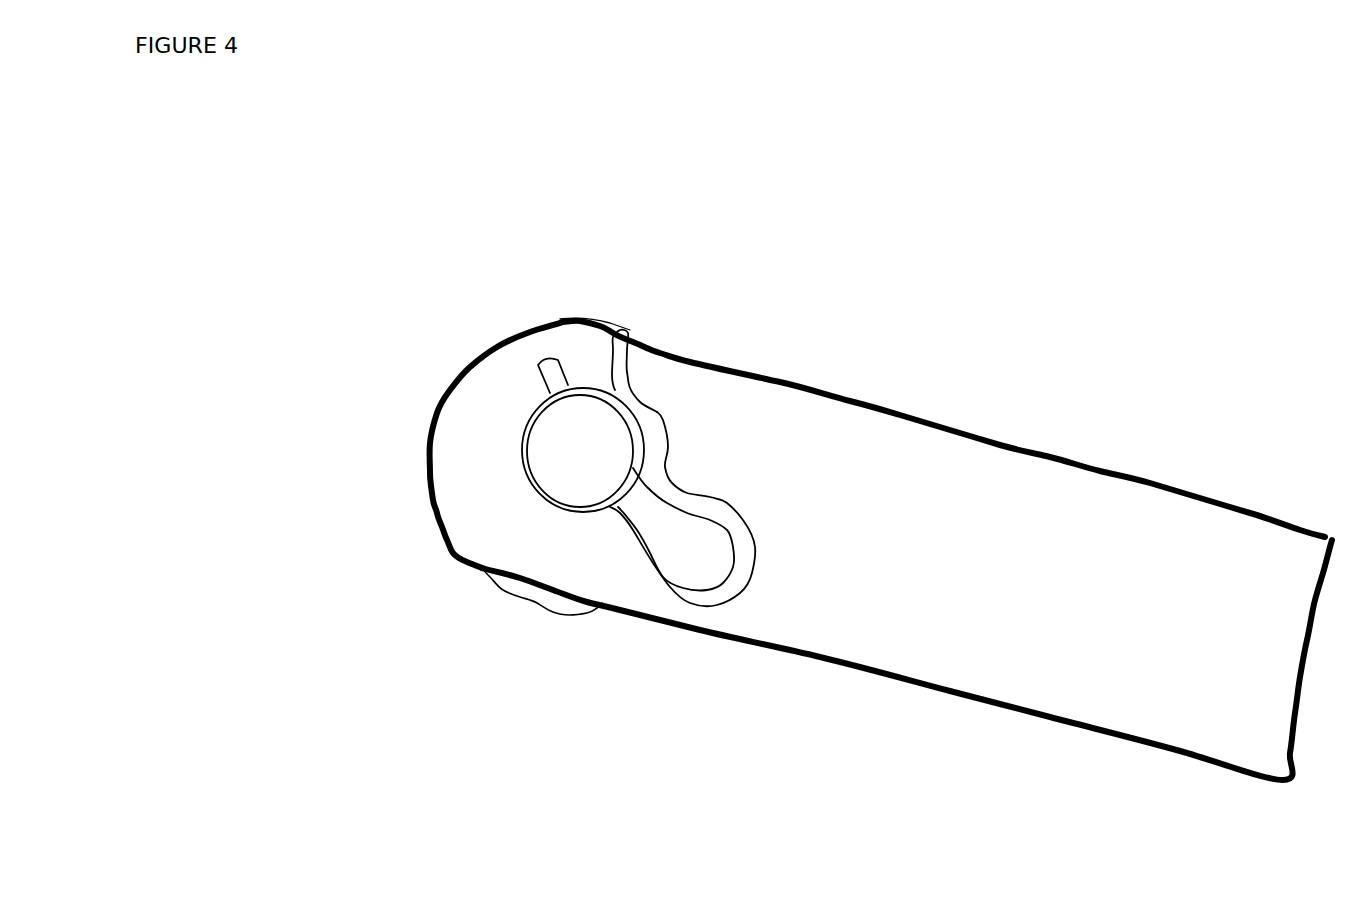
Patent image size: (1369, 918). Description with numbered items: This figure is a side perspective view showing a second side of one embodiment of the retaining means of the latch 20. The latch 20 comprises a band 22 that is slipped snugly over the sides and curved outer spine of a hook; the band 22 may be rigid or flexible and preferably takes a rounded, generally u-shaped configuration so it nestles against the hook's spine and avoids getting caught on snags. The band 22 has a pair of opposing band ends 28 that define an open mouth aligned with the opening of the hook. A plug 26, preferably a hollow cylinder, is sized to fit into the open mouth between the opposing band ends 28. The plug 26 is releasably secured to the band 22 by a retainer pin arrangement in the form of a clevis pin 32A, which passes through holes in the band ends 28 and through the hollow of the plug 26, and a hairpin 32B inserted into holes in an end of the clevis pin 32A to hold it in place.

The latch 20 is at (848, 283).
The band 22 is at (1146, 483).
The plug 26 is at (602, 320).
The opposing band ends 28 is at (428, 482).
The clevis pin 32A is at (573, 477).
The hairpin 32B is at (732, 588).